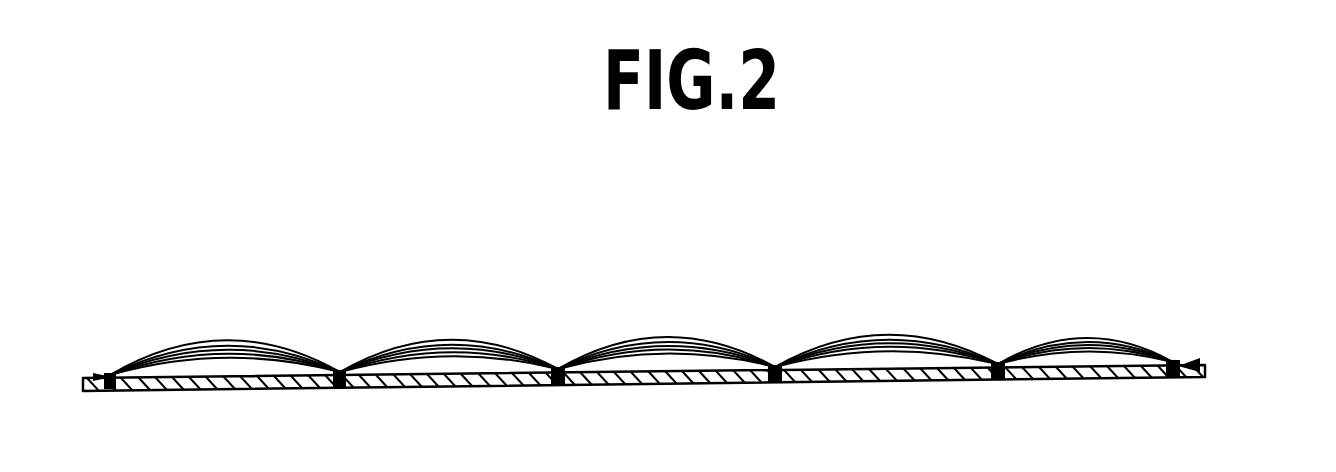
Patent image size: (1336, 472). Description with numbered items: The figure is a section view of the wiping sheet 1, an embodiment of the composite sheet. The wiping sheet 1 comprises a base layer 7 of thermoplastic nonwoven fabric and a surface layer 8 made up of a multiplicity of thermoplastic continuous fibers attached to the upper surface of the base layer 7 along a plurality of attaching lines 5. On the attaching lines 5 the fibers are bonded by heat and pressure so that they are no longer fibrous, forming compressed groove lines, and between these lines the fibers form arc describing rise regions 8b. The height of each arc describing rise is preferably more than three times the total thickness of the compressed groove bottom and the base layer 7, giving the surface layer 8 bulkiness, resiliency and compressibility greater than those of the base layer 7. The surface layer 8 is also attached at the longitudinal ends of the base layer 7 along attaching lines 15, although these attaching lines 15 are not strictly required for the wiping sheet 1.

The wiping sheet 1 is at (758, 240).
The attaching lines 5 is at (553, 372).
The base layer 7 is at (1207, 369).
The surface layer 8 is at (1110, 358).
The arc describing rise regions 8b is at (660, 347).
The attaching lines 15 is at (1170, 362).